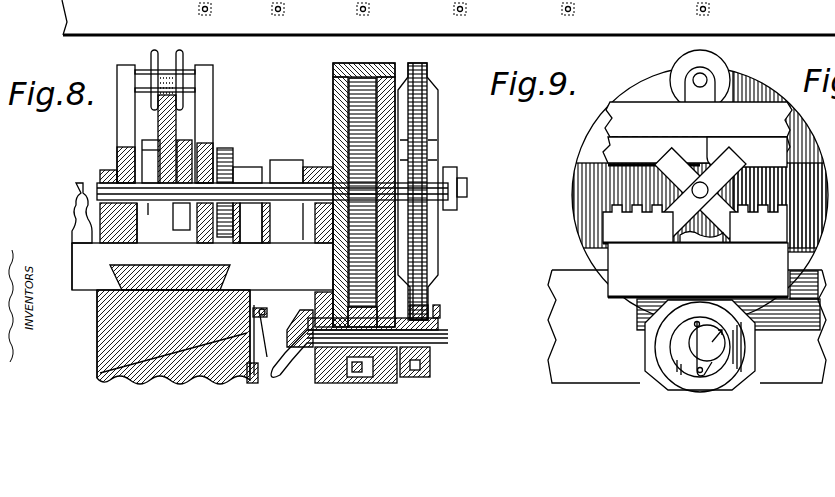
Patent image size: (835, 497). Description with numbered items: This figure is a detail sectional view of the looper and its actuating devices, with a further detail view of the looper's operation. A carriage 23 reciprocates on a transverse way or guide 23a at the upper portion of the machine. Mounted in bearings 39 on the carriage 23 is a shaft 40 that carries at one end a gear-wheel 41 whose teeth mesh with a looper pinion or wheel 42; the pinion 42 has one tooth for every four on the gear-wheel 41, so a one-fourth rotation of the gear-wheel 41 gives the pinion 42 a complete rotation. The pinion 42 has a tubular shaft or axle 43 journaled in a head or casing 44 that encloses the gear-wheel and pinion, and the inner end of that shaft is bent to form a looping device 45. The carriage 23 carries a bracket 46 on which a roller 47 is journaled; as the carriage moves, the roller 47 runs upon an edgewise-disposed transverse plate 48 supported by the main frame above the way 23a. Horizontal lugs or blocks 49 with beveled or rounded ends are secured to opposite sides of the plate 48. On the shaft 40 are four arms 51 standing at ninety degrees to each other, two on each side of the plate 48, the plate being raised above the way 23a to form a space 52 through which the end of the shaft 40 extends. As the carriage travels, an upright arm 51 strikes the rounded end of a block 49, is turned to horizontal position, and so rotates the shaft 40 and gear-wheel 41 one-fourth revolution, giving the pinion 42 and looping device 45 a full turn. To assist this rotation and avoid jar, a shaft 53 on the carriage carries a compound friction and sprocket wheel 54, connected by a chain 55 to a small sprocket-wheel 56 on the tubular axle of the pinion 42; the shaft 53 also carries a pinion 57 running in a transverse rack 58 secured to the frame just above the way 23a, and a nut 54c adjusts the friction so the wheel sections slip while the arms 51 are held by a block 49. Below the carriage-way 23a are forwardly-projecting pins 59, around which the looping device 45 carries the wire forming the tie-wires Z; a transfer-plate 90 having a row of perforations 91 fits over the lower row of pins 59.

In FIG. 8, the carriage 23 is at (202, 266).
In FIG. 9, the carriage 23 is at (698, 270).
In FIG. 8, the transverse way or guide 23a is at (97, 320).
In FIG. 9, the transverse way or guide 23a is at (687, 326).
In FIG. 8, the bearings 39 is at (98, 168).
In FIG. 8, the shaft 40 is at (282, 192).
In FIG. 9, the shaft 40 is at (688, 200).
In FIG. 8, the gear-wheel 41 is at (350, 80).
In FIG. 8, the looper pinion or wheel 42 is at (366, 366).
In FIG. 8, the tubular shaft or axle 43 is at (322, 372).
In FIG. 8, the head or casing 44 is at (333, 372).
In FIG. 9, the head or casing 44 is at (668, 358).
In FIG. 8, the looping device 45 is at (285, 370).
In FIG. 9, the looping device 45 is at (700, 368).
In FIG. 8, the bracket 46 is at (125, 73).
In FIG. 9, the bracket 46 is at (697, 93).
In FIG. 8, the roller 47 is at (168, 72).
In FIG. 9, the roller 47 is at (720, 73).
In FIG. 8, the transverse plate 48 is at (158, 120).
In FIG. 8, the lugs or blocks 49 is at (186, 148).
In FIG. 9, the lugs or blocks 49 is at (743, 145).
In FIG. 8, the arms 51 is at (182, 210).
In FIG. 9, the arms 51 is at (737, 162).
In FIG. 8, the space 52 is at (95, 183).
In FIG. 8, the shaft 53 is at (268, 174).
In FIG. 8, the compound friction and sprocket wheel 54 is at (420, 102).
In FIG. 8, the nut 54c is at (455, 202).
In FIG. 8, the chain 55 is at (425, 150).
In FIG. 8, the small sprocket-wheel 56 is at (433, 310).
In FIG. 8, the pinion 57 is at (243, 187).
In FIG. 8, the transverse rack 58 is at (235, 231).
In FIG. 9, the transverse rack 58 is at (695, 224).
In FIG. 8, the pins 59 is at (268, 355).
In FIG. 9, the pins 59 is at (707, 363).
In FIG. 8, the transfer-plate 90 is at (255, 372).
In FIG. 8, the perforations 91 is at (227, 382).
In FIG. 8, the tie-wires Z is at (157, 375).
In FIG. 9, the tie-wires Z is at (690, 340).